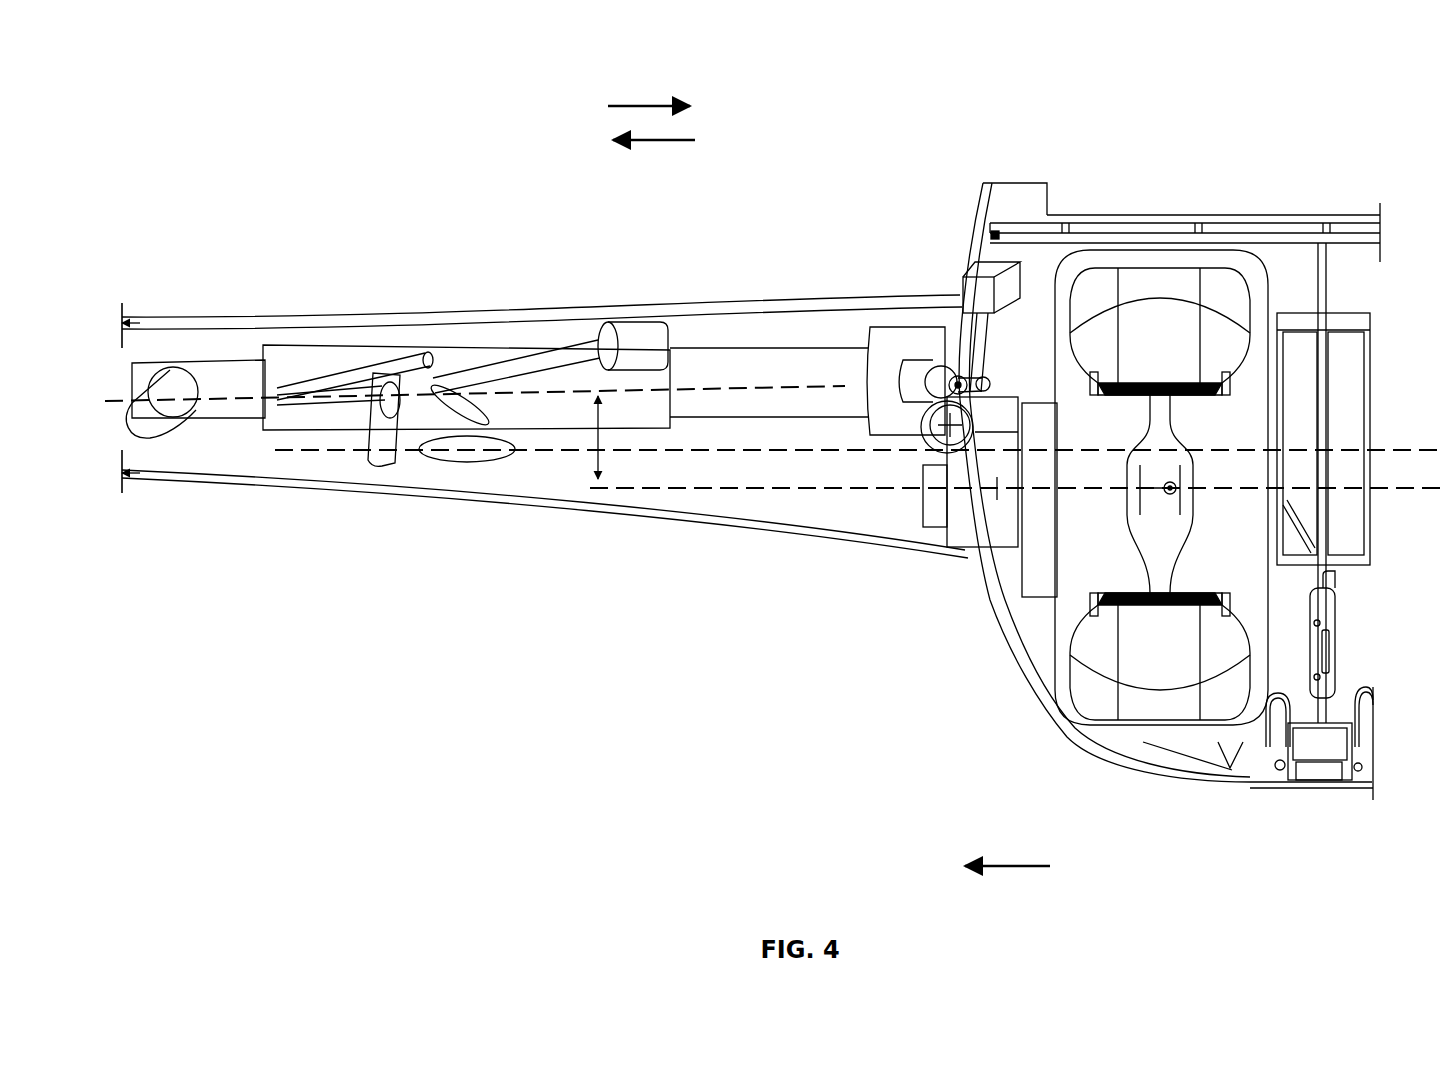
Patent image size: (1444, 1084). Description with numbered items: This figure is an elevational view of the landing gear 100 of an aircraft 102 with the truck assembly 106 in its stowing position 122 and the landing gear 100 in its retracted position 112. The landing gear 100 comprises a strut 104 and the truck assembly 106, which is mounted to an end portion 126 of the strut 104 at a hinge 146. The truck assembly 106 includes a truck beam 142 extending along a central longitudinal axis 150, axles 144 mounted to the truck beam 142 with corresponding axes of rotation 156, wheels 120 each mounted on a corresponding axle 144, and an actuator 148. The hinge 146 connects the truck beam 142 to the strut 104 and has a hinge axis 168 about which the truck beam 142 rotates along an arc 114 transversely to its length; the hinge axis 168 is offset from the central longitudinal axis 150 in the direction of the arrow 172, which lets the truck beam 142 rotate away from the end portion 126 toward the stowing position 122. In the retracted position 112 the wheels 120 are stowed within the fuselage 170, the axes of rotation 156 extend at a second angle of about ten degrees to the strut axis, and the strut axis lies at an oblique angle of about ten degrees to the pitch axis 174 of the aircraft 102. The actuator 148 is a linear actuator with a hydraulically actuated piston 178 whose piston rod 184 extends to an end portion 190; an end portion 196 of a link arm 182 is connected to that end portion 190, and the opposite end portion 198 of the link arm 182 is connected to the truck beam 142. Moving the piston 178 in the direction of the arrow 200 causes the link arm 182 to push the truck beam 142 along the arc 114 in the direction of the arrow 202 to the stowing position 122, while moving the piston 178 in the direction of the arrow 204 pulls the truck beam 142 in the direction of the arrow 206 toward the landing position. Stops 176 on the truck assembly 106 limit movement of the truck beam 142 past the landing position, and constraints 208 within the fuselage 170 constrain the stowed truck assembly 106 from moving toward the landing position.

The landing gear 100 is at (813, 218).
The aircraft 102 is at (660, 522).
The strut 104 is at (520, 333).
The truck assembly 106 is at (963, 603).
The retracted position 112 is at (803, 331).
The arc 114 is at (1052, 350).
The wheels 120 is at (1212, 262).
The stowing position 122 is at (1038, 634).
The end portion 126 is at (876, 298).
The truck beam 142 is at (968, 586).
The axles 144 is at (1105, 532).
The hinge 146 is at (918, 450).
The actuator 148 is at (981, 366).
The central longitudinal axis 150 is at (1000, 600).
The axes of rotation 156 is at (1386, 494).
The hinge axis 168 is at (930, 418).
The fuselage 170 is at (1140, 762).
The arrow 172 is at (1012, 868).
The pitch axis 174 is at (1392, 449).
The stops 176 is at (967, 356).
The piston 178 is at (955, 532).
The link arm 182 is at (1019, 436).
The piston rod 184 is at (950, 428).
The end portion 190 is at (989, 338).
The end portion 196 is at (1005, 384).
The end portion 198 is at (1022, 440).
The arrow 200 is at (650, 105).
The arrow 202 is at (1058, 335).
The arrow 204 is at (652, 142).
The arrow 206 is at (1040, 388).
The constraints 208 is at (996, 236).